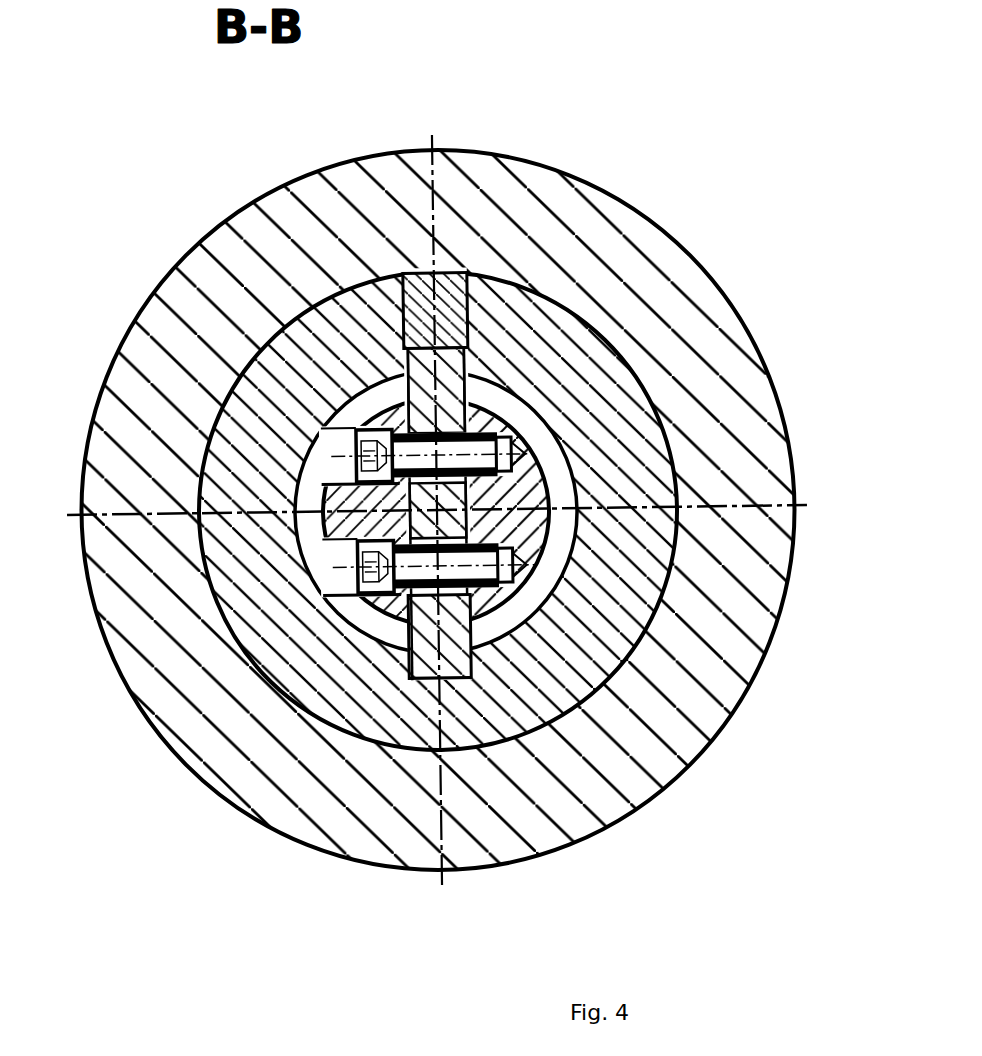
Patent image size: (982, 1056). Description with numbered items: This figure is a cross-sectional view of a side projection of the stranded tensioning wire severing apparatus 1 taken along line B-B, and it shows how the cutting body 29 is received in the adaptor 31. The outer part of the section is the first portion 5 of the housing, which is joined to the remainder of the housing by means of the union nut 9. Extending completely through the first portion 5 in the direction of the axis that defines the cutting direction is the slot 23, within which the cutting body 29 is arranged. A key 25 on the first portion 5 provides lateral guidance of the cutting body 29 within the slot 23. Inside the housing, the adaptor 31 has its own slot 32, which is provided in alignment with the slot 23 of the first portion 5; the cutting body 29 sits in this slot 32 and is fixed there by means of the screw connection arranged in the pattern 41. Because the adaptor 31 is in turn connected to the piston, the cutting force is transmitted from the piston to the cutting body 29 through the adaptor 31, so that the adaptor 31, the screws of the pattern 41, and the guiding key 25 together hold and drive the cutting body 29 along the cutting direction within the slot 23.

The stranded tensioning wire severing apparatus 1 is at (142, 68).
The first portion 5 is at (273, 373).
The union nut 9 is at (257, 235).
The slot 23 is at (420, 253).
The key 25 is at (440, 277).
The cutting body 29 is at (408, 680).
The adaptor 31 is at (505, 612).
The slot 32 is at (472, 423).
The pattern 41 is at (318, 480).